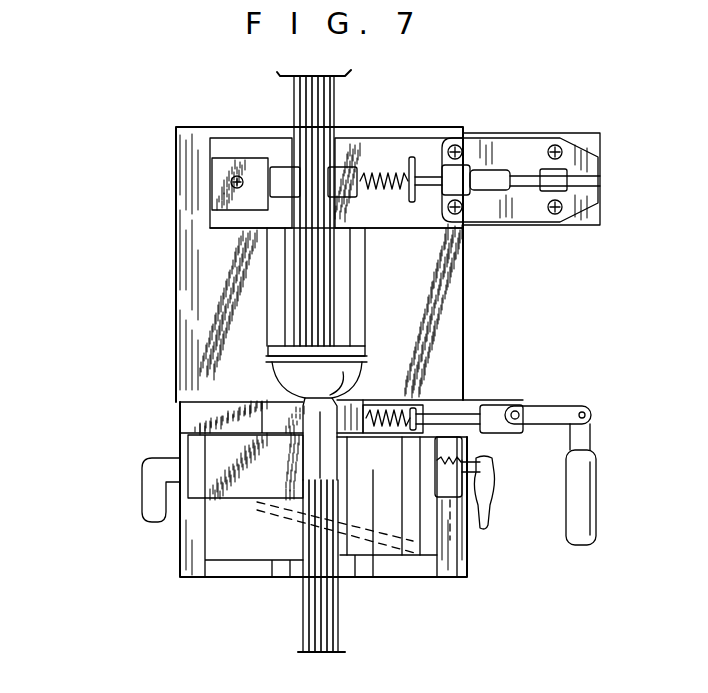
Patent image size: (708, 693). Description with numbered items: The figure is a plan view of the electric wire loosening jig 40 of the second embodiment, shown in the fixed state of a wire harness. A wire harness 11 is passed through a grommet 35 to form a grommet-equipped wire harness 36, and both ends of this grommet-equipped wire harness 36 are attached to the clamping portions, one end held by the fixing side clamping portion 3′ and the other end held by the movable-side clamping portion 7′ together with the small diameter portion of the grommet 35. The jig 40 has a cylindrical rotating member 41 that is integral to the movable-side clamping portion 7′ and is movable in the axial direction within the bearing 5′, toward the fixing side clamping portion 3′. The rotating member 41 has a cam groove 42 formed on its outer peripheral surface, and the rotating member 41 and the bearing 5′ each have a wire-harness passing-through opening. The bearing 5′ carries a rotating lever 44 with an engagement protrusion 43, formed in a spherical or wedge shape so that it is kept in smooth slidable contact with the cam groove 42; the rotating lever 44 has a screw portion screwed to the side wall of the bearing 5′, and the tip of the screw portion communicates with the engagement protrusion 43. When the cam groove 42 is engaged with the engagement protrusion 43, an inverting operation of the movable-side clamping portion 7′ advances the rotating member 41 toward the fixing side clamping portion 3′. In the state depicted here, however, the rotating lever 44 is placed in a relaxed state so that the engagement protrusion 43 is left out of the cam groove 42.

The fixing side clamping portion 3′ is at (382, 150).
The wire harness 11 is at (298, 292).
The grommet 35 is at (265, 377).
The grommet-equipped wire harness 36 is at (95, 226).
The electric wire loosening jig 40 is at (117, 309).
The bearing 5′ is at (206, 448).
The movable-side clamping portion 7′ is at (500, 426).
The rotating member 41 is at (202, 544).
The cam groove 42 is at (408, 553).
The engagement protrusion 43 is at (470, 550).
The rotating lever 44 is at (493, 512).